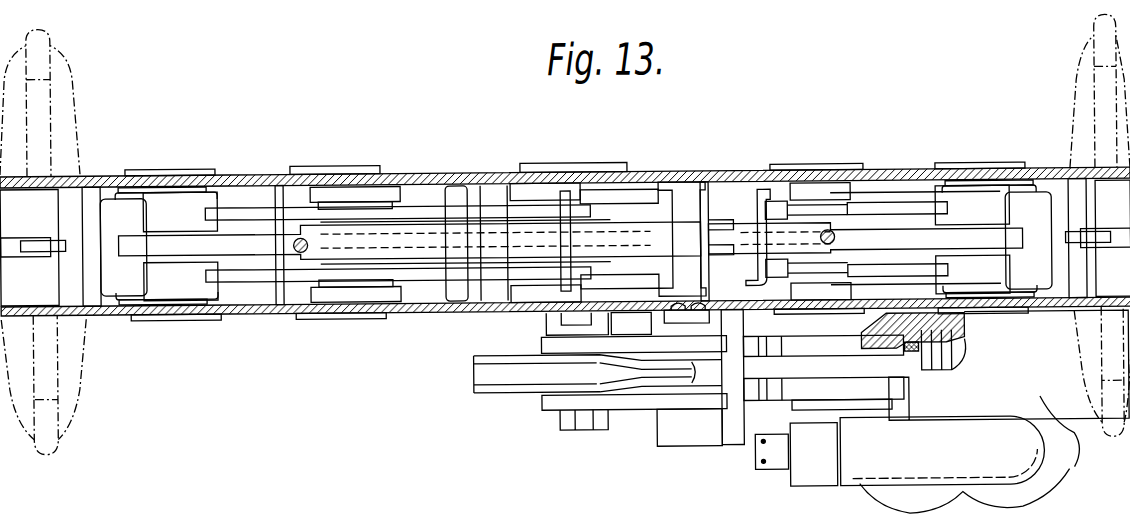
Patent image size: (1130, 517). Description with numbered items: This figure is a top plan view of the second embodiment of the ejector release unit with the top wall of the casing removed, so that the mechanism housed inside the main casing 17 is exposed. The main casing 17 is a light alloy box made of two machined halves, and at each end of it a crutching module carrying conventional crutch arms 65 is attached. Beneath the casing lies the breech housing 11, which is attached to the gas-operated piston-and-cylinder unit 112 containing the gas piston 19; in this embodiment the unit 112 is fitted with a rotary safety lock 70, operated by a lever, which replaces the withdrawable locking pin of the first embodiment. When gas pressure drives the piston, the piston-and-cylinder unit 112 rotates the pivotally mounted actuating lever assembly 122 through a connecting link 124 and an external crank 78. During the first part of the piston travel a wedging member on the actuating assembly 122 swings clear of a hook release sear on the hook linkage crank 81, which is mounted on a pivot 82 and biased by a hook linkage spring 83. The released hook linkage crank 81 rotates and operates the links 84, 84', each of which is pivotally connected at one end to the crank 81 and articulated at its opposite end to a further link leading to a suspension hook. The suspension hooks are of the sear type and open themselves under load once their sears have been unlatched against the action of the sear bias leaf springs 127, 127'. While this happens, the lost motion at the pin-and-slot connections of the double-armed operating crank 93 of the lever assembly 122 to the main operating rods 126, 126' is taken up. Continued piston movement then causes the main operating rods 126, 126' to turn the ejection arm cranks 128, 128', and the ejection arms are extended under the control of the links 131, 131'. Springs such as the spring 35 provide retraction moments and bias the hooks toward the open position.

The breech housing 11 is at (1030, 501).
The main casing 17 is at (633, 178).
The gas piston 19 is at (948, 350).
The spring 35 is at (113, 188).
The crutch arm 65 is at (75, 378).
The rotary safety lock 70 is at (728, 450).
The external crank 78 is at (523, 377).
The hook linkage crank 81 is at (699, 212).
The pivot 82 is at (681, 206).
The hook linkage spring 83 is at (729, 218).
The link 84 is at (466, 216).
The link 84' is at (806, 201).
The double-armed operating crank 93 is at (578, 250).
The gas-operated piston-and-cylinder unit 112 is at (1070, 474).
The actuating lever assembly 122 is at (520, 316).
The connecting link 124 is at (617, 378).
The main operating rod 126 is at (398, 204).
The main operating rod 126' is at (915, 203).
The sear bias leaf spring 127 is at (409, 193).
The sear bias leaf spring 127' is at (865, 188).
The ejection arm crank 128 is at (167, 217).
The ejection arm crank 128' is at (985, 210).
The link 131 is at (343, 282).
The link 131' is at (822, 213).